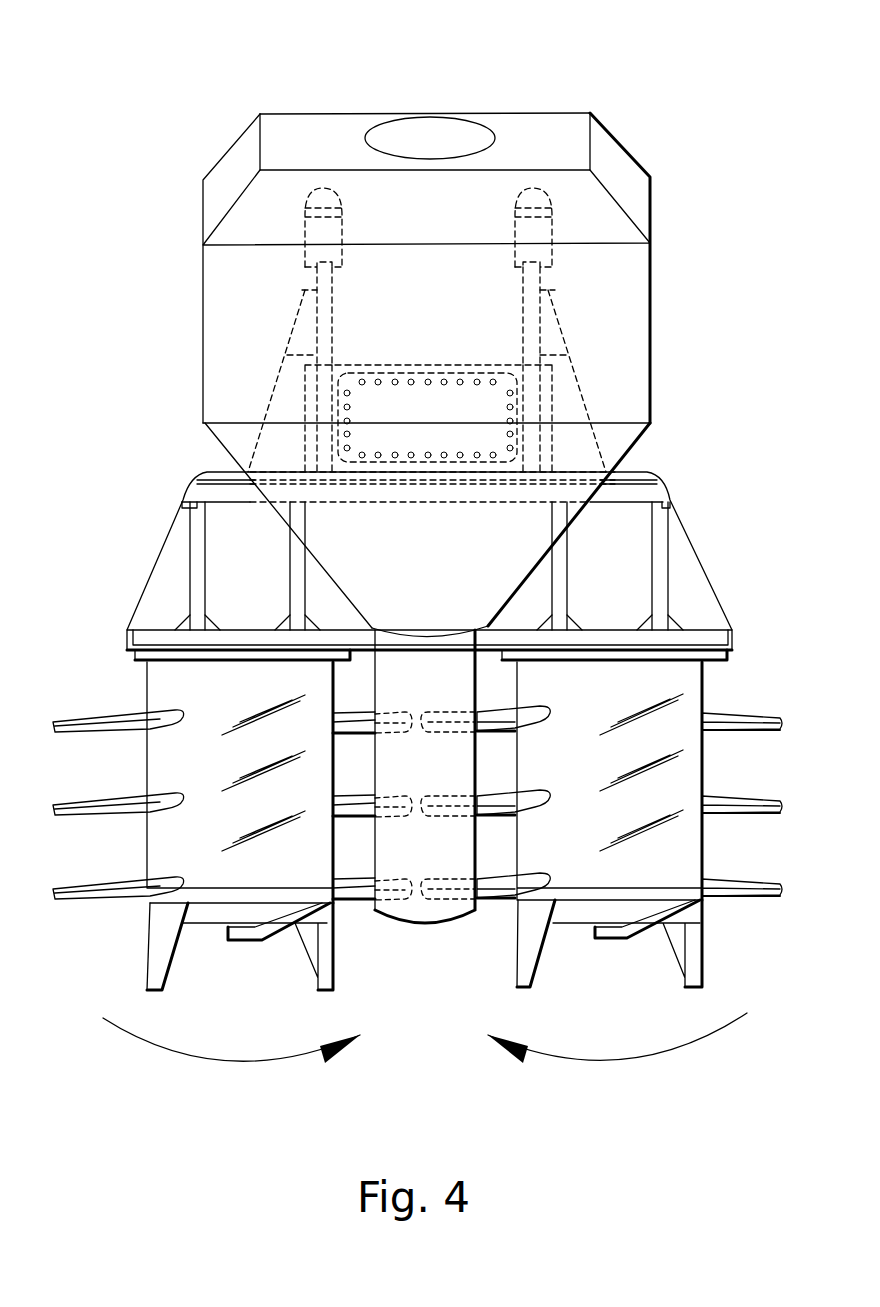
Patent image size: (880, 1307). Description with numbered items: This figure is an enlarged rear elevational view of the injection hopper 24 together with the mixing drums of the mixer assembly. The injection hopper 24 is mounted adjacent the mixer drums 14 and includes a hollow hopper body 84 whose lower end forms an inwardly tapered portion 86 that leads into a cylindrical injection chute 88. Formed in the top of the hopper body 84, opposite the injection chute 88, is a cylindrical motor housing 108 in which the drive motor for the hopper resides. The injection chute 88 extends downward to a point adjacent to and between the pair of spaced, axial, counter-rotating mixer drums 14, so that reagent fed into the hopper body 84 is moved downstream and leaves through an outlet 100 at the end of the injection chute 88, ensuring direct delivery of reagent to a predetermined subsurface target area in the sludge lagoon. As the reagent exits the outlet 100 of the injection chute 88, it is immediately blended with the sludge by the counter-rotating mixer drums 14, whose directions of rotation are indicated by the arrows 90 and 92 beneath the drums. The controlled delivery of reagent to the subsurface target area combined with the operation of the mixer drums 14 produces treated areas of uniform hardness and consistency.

The injection hopper 24 is at (132, 172).
The cylindrical motor housing 108 is at (425, 123).
The hollow hopper body 84 is at (203, 403).
The inwardly tapered portion 86 is at (507, 548).
The cylindrical injection chute 88 is at (435, 766).
The outlet 100 is at (425, 913).
The mixer drums 14 is at (127, 900).
The arrow 90 is at (228, 1065).
The arrow 92 is at (607, 1065).